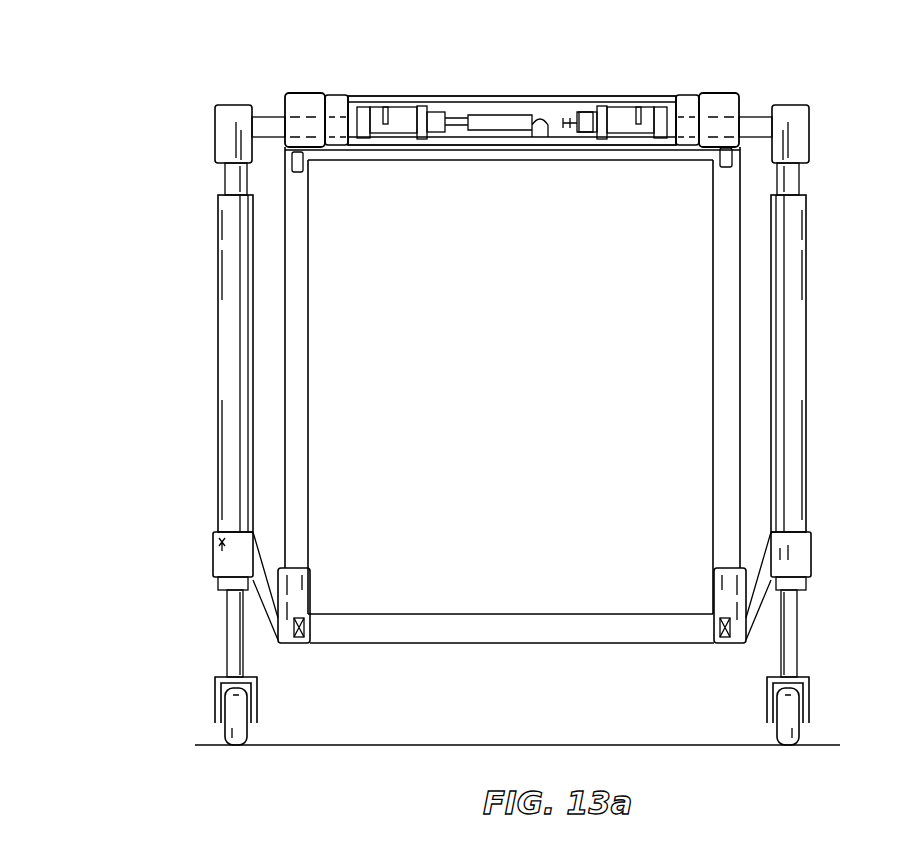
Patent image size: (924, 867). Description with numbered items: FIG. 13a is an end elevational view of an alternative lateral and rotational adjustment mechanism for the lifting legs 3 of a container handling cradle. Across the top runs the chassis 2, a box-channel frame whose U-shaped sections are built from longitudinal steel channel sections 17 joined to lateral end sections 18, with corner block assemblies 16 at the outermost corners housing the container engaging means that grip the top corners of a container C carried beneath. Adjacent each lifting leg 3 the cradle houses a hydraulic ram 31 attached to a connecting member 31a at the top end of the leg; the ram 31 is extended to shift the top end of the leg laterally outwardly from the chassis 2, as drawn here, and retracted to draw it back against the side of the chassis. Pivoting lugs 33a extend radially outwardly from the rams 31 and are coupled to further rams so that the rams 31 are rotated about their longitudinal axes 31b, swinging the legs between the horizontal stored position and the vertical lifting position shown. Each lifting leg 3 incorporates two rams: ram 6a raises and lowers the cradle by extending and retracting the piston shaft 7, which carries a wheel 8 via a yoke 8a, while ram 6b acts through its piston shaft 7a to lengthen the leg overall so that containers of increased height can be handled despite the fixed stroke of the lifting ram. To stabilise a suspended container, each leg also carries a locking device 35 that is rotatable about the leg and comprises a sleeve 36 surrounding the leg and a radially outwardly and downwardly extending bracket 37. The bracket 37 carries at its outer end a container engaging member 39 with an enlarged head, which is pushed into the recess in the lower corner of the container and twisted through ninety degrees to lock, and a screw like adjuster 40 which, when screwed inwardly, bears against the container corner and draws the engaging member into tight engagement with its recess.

The chassis 2 is at (460, 92).
The lifting legs 3 is at (209, 388).
The ram 6a is at (218, 440).
The ram 6b is at (230, 280).
The piston shaft 7 is at (230, 608).
The piston shaft 7a is at (225, 183).
The wheel 8 is at (236, 746).
The yoke 8a is at (217, 696).
The corner block assemblies 16 is at (307, 107).
The longitudinal steel channel sections 17 is at (340, 100).
The lateral end sections 18 is at (511, 96).
The hydraulic ram 31 is at (407, 107).
The connecting members 31a is at (237, 110).
The longitudinal axis 31b is at (268, 115).
The pivoting lugs 33a is at (384, 105).
The locking devices 35 is at (215, 558).
The sleeve 36 is at (215, 533).
The bracket 37 is at (262, 566).
The container engaging member 39 is at (303, 646).
The screw like adjusters 40 is at (268, 632).
The panel C is at (484, 246).